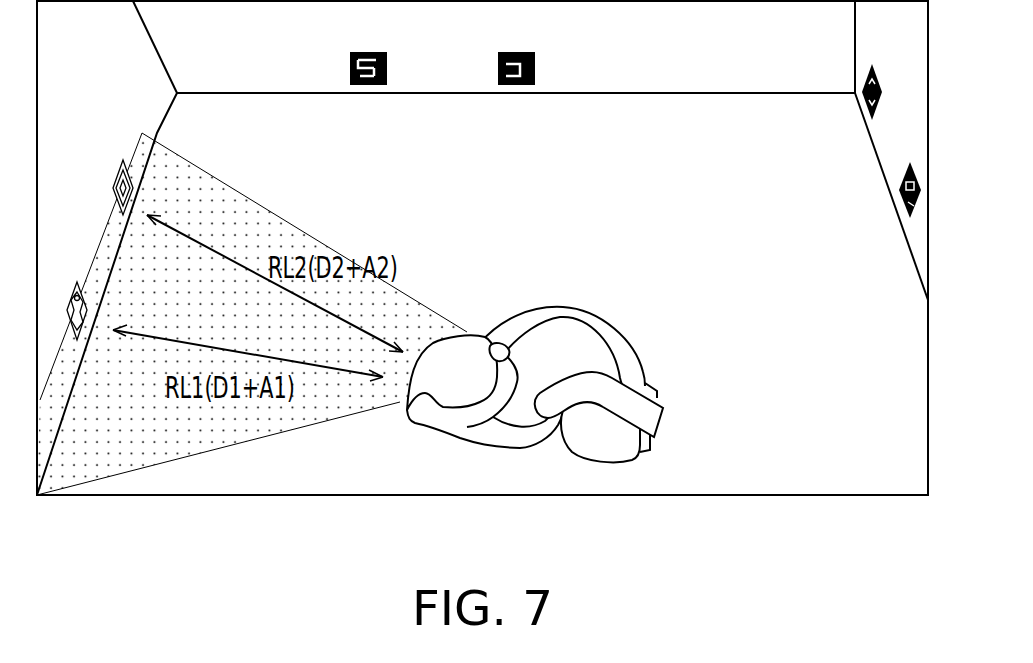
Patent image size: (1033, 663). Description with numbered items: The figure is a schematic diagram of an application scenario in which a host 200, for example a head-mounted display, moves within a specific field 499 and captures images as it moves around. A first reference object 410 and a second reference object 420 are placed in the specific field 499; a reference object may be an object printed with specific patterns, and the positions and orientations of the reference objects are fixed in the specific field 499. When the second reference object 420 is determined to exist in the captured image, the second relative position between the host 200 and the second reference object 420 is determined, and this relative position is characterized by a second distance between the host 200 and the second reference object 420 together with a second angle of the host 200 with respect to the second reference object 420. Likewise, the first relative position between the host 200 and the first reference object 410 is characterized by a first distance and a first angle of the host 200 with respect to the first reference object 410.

The host 200 is at (597, 393).
The first reference object 410 is at (77, 282).
The second reference object 420 is at (118, 170).
The specific field 499 is at (840, 350).